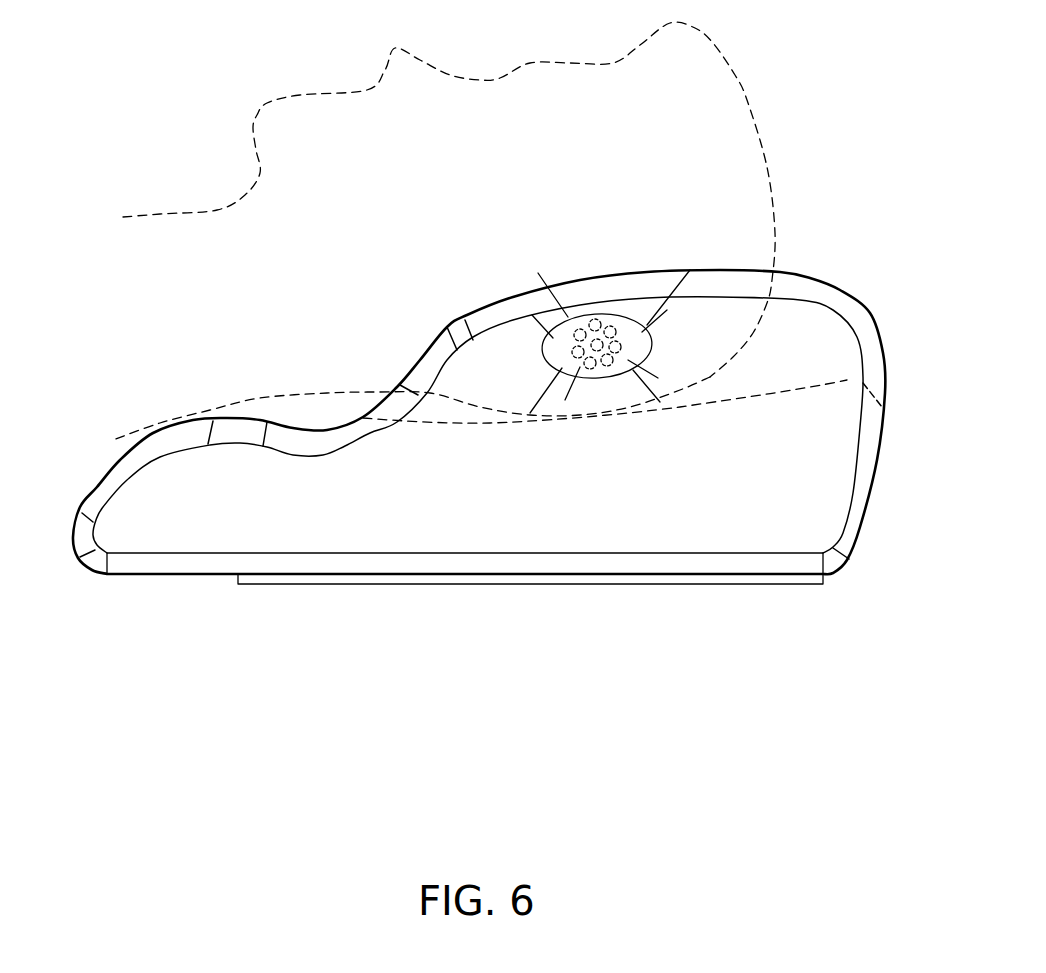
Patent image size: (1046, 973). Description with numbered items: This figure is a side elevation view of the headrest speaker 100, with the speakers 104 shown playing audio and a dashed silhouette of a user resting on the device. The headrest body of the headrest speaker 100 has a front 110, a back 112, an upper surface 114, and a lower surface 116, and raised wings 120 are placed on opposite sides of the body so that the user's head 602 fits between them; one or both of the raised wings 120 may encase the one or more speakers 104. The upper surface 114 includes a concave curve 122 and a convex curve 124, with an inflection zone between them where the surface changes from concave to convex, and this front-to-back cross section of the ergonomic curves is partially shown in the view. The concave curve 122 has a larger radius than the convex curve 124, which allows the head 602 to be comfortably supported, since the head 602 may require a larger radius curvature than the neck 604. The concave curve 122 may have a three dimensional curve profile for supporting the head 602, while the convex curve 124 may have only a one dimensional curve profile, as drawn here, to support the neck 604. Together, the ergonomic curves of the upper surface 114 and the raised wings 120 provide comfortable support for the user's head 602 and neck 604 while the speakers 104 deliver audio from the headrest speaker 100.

The headrest speaker 100 is at (98, 381).
The front 110 is at (78, 465).
The back 112 is at (876, 586).
The upper surface 114 is at (717, 410).
The lower surface 116 is at (557, 625).
The raised wings 120 is at (560, 480).
The concave curve 122 is at (657, 413).
The convex curve 124 is at (208, 444).
The speakers 104 is at (550, 353).
The user's head 602 is at (257, 115).
The user's neck 604 is at (313, 393).